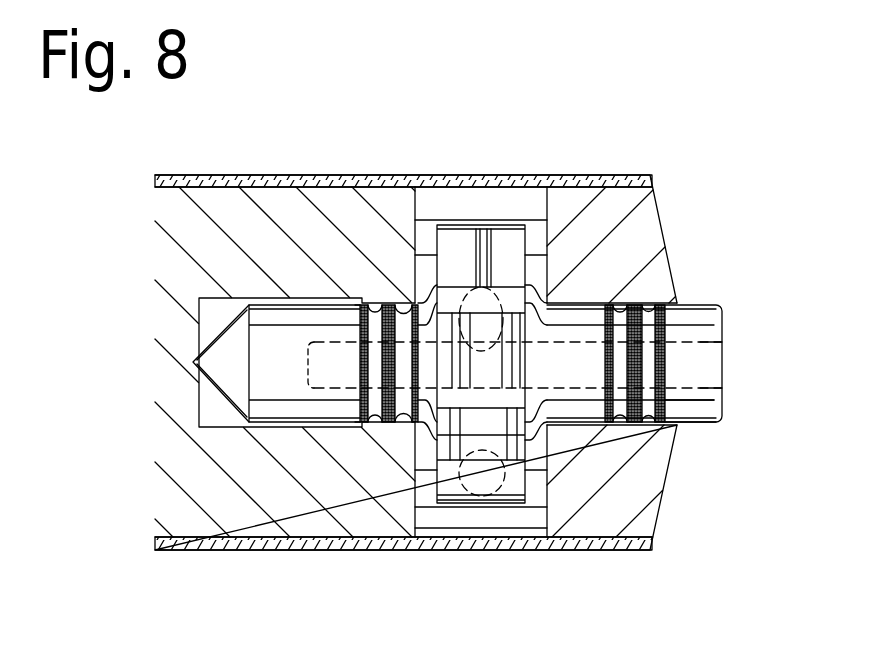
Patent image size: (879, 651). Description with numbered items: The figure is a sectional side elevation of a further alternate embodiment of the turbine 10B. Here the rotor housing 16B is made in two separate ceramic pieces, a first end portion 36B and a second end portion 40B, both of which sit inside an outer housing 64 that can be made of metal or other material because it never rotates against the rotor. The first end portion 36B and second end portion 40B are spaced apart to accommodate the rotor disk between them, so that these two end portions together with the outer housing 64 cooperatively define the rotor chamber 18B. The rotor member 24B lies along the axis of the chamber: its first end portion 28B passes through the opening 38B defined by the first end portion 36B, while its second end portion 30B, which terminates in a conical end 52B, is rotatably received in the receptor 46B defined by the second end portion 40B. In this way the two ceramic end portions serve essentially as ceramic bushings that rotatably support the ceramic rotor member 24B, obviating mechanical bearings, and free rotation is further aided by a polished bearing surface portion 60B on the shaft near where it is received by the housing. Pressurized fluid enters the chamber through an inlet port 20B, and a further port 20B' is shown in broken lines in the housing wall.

The turbine 10B is at (656, 141).
The rotor housing 16B is at (387, 174).
The rotor chamber 18B is at (507, 207).
The inlet port 20B is at (518, 549).
The retaining pin 20B' is at (498, 199).
The rotor member 24B is at (724, 364).
The first end portion of the rotor member 28B is at (723, 405).
The second end portion of the rotor member 30B is at (290, 393).
The first end portion of the rotor housing 36B is at (657, 213).
The opening 38B is at (682, 425).
The second end portion of the rotor housing 40B is at (155, 232).
The receptor 46B is at (217, 418).
The conical end 52B is at (218, 346).
The polished bearing surface portion 60B is at (388, 305).
The outer housing 64 is at (248, 175).